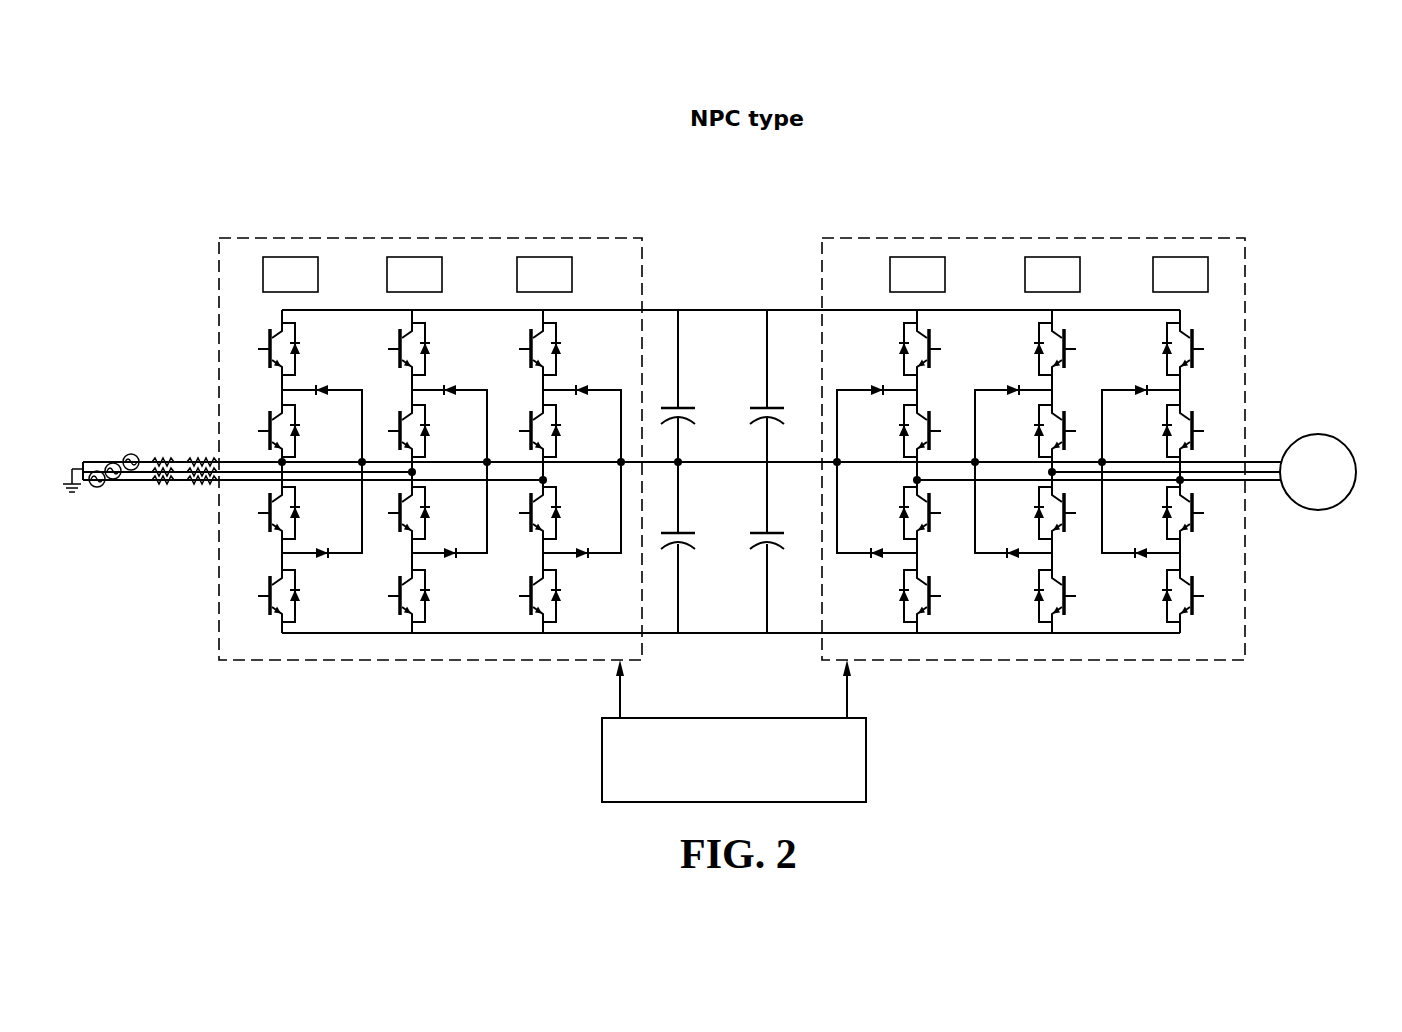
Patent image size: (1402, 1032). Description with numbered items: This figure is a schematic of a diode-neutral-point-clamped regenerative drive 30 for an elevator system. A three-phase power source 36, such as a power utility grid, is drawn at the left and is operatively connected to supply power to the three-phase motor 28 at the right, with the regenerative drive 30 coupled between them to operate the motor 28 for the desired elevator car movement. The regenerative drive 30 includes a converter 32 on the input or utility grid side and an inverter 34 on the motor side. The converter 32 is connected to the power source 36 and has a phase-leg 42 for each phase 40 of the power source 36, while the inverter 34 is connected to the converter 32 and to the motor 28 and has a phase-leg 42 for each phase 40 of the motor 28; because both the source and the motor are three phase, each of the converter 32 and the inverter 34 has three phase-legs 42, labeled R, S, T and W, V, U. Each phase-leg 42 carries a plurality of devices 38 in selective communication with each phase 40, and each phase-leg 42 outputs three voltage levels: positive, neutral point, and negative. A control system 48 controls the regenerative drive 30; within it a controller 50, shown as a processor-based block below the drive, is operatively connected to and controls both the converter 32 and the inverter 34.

The motor 28 is at (1318, 434).
The regenerative drive 30 is at (1145, 152).
The converter 32 is at (219, 660).
The inverter 34 is at (1246, 661).
The power source 36 is at (121, 440).
The devices 38 is at (759, 466).
The phase 40 is at (694, 487).
The phase-leg 42 is at (735, 232).
The control system 48 is at (453, 696).
The controller 50 is at (866, 755).